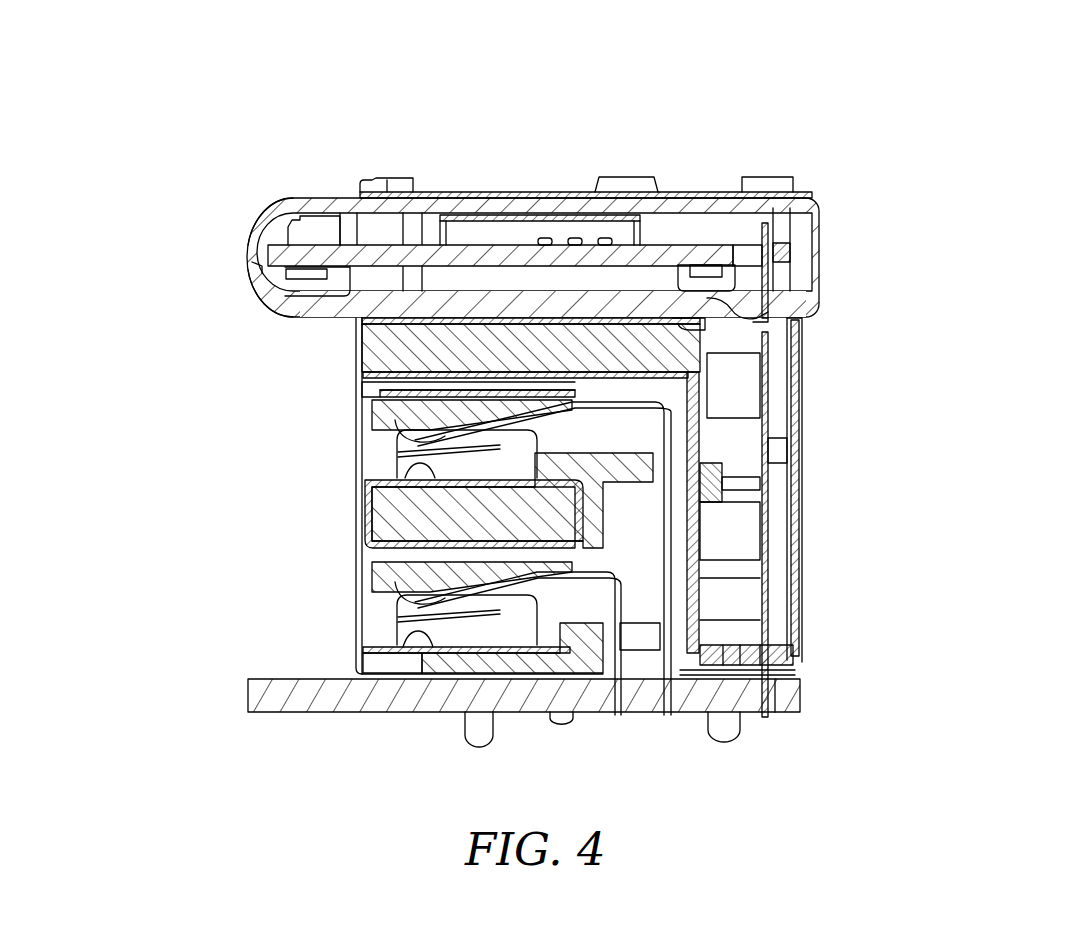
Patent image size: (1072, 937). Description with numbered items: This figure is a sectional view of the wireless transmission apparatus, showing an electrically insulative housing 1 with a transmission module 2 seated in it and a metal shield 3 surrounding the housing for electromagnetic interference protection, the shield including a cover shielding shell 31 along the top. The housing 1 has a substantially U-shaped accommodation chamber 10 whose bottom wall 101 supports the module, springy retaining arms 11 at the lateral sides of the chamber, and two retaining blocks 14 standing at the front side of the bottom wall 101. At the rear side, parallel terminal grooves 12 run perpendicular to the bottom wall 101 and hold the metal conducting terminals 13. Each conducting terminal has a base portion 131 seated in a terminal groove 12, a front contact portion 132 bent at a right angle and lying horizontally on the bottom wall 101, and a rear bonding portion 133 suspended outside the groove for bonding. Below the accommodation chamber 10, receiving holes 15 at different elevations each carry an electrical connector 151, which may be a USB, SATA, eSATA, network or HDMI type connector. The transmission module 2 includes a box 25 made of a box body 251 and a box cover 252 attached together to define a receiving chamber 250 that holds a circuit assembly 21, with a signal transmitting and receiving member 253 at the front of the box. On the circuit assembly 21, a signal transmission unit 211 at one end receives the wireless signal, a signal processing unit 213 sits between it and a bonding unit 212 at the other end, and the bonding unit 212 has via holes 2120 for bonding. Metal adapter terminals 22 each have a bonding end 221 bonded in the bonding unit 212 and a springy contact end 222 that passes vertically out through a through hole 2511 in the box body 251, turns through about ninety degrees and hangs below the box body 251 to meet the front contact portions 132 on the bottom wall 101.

The electrically insulative housing 1 is at (345, 112).
The transmission module 2 is at (967, 233).
The metal shield 3 is at (462, 112).
The accommodation chamber 10 is at (370, 372).
The bottom wall 101 is at (480, 322).
The springy retaining arms 11 is at (625, 185).
The terminal grooves 12 is at (777, 363).
The metal conducting terminals 13 is at (772, 536).
The base portion 131 is at (767, 447).
The front contact portion 132 is at (703, 328).
The rear bonding portion 133 is at (763, 702).
The retaining blocks 14 is at (372, 190).
The receiving holes 15 is at (470, 378).
The electrical connector 151 is at (412, 640).
The circuit assembly 21 is at (672, 257).
The signal transmission unit 211 is at (307, 245).
The bonding unit 212 is at (782, 247).
The via holes 2120 is at (778, 253).
The signal processing unit 213 is at (545, 238).
The metal adapter terminals 22 is at (767, 280).
The bonding end 221 is at (767, 230).
The springy contact end 222 is at (767, 328).
The box 25 is at (260, 112).
The receiving chamber 250 is at (377, 278).
The box body 251 is at (285, 303).
The through holes 2511 is at (760, 301).
The box cover 252 is at (335, 210).
The signal transmitting and receiving member 253 is at (263, 218).
The cover shielding shell 31 is at (503, 193).